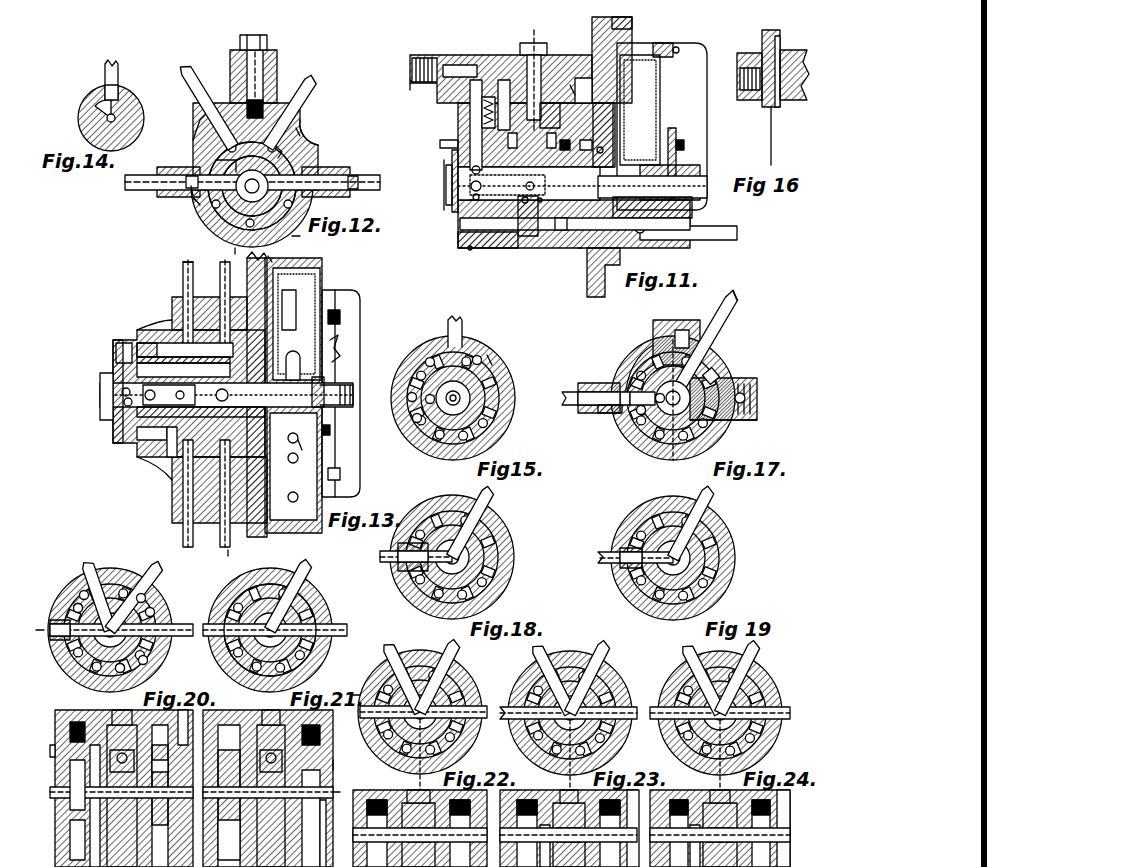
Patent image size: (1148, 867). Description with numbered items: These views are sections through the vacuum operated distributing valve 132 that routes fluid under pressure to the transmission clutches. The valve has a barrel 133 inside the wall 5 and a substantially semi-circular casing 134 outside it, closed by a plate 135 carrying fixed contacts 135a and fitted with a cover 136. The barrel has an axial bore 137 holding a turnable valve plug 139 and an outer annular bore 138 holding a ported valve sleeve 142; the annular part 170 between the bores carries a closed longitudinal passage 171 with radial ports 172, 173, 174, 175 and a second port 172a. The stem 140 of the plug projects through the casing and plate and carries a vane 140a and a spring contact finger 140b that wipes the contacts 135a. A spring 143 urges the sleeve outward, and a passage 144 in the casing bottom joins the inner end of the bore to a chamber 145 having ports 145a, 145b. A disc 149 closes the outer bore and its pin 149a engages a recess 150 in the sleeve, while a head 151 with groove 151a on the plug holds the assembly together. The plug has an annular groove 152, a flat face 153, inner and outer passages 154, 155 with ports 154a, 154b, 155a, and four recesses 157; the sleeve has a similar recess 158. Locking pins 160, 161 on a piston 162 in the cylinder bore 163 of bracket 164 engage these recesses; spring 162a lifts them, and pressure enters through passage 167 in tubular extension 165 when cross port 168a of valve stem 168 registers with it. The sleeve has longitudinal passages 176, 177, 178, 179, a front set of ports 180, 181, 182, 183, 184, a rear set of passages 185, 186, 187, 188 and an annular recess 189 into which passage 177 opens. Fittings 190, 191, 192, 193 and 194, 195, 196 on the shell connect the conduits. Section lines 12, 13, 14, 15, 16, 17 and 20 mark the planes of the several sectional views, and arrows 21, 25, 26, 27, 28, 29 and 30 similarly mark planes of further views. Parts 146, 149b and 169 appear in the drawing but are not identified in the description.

In FIG. 11, the wall 5 is at (592, 22).
In FIG. 11, the section line 12 is at (541, 31).
In FIG. 13, the section line 12 is at (196, 275).
In FIG. 12, the section line 13 is at (125, 172).
In FIG. 11, the section line 13 is at (396, 180).
In FIG. 11, the section line 14 is at (458, 144).
In FIG. 11, the section line 15 is at (470, 114).
In FIG. 11, the section line 16 is at (401, 76).
In FIG. 12, the section line 17 is at (230, 254).
In FIG. 13, the section line 17 is at (226, 556).
In FIG. 20, the section line 20 is at (45, 779).
In FIG. 21, the section line 21 is at (343, 794).
In FIG. 22, the section line 21 is at (350, 690).
In FIG. 20, the section line 25 is at (43, 628).
In FIG. 21, the lever / section line 26 is at (322, 652).
In FIG. 22, the lever / section line 26 is at (383, 678).
In FIG. 18, the lever / section line 27 is at (461, 636).
In FIG. 21, the lever / section line 27 is at (384, 761).
In FIG. 22, the lever / section line 27 is at (438, 676).
In FIG. 23, the section line 28 is at (500, 721).
In FIG. 24, the section line 29 is at (659, 721).
In FIG. 11, the direction arrow 30 is at (644, 27).
In FIG. 12, the distributing valve 132 is at (308, 242).
In FIG. 11, the distributing valve 132 is at (447, 258).
In FIG. 13, the distributing valve 132 is at (109, 459).
In FIG. 17, the distributing valve 132 is at (638, 463).
In FIG. 12, the barrel 133 is at (196, 212).
In FIG. 11, the barrel 133 is at (580, 250).
In FIG. 13, the barrel 133 is at (160, 320).
In FIG. 17, the barrel 133 is at (630, 348).
In FIG. 11, the casing 134 is at (592, 50).
In FIG. 13, the casing 134 is at (322, 262).
In FIG. 11, the plate 135 is at (668, 100).
In FIG. 13, the plate 135 is at (340, 486).
In FIG. 11, the fixed contacts 135a is at (676, 160).
In FIG. 13, the fixed contacts 135a is at (328, 432).
In FIG. 11, the cover 136 is at (676, 140).
In FIG. 13, the cover 136 is at (355, 300).
In FIG. 11, the axial bore 137 is at (600, 180).
In FIG. 13, the axial bore 137 is at (293, 433).
In FIG. 11, the annular bore 138 is at (600, 150).
In FIG. 13, the annular bore 138 is at (293, 463).
In FIG. 14, the valve plug 139 is at (104, 108).
In FIG. 11, the valve plug 139 is at (470, 196).
In FIG. 13, the valve plug 139 is at (125, 405).
In FIG. 15, the valve plug 139 is at (478, 418).
In FIG. 17, the valve plug 139 is at (630, 420).
In FIG. 18, the valve plug 139 is at (485, 566).
In FIG. 19, the valve plug 139 is at (640, 580).
In FIG. 20, the valve plug 139 is at (112, 676).
In FIG. 21, the valve plug 139 is at (265, 680).
In FIG. 22, the valve plug 139 is at (420, 770).
In FIG. 23, the valve plug 139 is at (570, 770).
In FIG. 24, the valve plug 139 is at (720, 770).
In FIG. 11, the stem 140 is at (660, 185).
In FIG. 13, the stem 140 is at (322, 425).
In FIG. 13, the vane 140a is at (335, 300).
In FIG. 13, the spring contact finger 140b is at (340, 352).
In FIG. 12, the valve sleeve 142 is at (216, 148).
In FIG. 11, the valve sleeve 142 is at (530, 232).
In FIG. 13, the valve sleeve 142 is at (137, 437).
In FIG. 17, the valve sleeve 142 is at (650, 445).
In FIG. 18, the valve sleeve 142 is at (495, 562).
In FIG. 19, the valve sleeve 142 is at (612, 572).
In FIG. 20, the valve sleeve 142 is at (95, 676).
In FIG. 21, the valve sleeve 142 is at (330, 640).
In FIG. 22, the valve sleeve 142 is at (380, 670).
In FIG. 23, the valve sleeve 142 is at (540, 800).
In FIG. 24, the valve sleeve 142 is at (690, 768).
In FIG. 11, the spring 143 is at (560, 235).
In FIG. 13, the spring 143 is at (262, 340).
In FIG. 20, the spring 143 is at (182, 728).
In FIG. 11, the passage 144 is at (600, 285).
In FIG. 11, the chamber 145 is at (692, 206).
In FIG. 13, the port 145a is at (293, 503).
In FIG. 13, the port 145b is at (300, 445).
In FIG. 11, the rod 146 is at (737, 236).
In FIG. 11, the disc 149 is at (458, 127).
In FIG. 13, the disc 149 is at (140, 356).
In FIG. 11, the pin 149a is at (451, 239).
In FIG. 13, the sleeve collar 149b is at (120, 352).
In FIG. 12, the recess 150 is at (294, 243).
In FIG. 13, the recess 150 is at (298, 254).
In FIG. 15, the recess 150 is at (453, 404).
In FIG. 21, the recess 150 is at (322, 782).
In FIG. 14, the head 151 is at (100, 118).
In FIG. 11, the head 151 is at (455, 160).
In FIG. 13, the head 151 is at (115, 369).
In FIG. 11, the annular groove 151a is at (450, 172).
In FIG. 13, the annular groove 151a is at (112, 383).
In FIG. 11, the annular groove 152 is at (624, 130).
In FIG. 13, the annular groove 152 is at (285, 318).
In FIG. 12, the flat face 153 is at (279, 104).
In FIG. 11, the flat face 153 is at (575, 85).
In FIG. 13, the flat face 153 is at (118, 400).
In FIG. 15, the flat face 153 is at (462, 345).
In FIG. 12, the inner passage 154 is at (230, 222).
In FIG. 11, the inner passage 154 is at (582, 186).
In FIG. 13, the inner passage 154 is at (258, 394).
In FIG. 17, the inner passage 154 is at (673, 460).
In FIG. 11, the port 154a is at (525, 200).
In FIG. 13, the port 154a is at (262, 370).
In FIG. 17, the port 154a is at (735, 420).
In FIG. 12, the port 154b is at (216, 204).
In FIG. 11, the port 154b is at (540, 200).
In FIG. 13, the port 154b is at (160, 452).
In FIG. 11, the outer passage 155 is at (470, 186).
In FIG. 13, the outer passage 155 is at (118, 390).
In FIG. 15, the outer passage 155 is at (470, 404).
In FIG. 11, the port 155a is at (480, 256).
In FIG. 13, the port 155a is at (145, 420).
In FIG. 11, the recesses 157 is at (470, 203).
In FIG. 15, the recess 158 is at (480, 355).
In FIG. 11, the locking pin 160 is at (470, 124).
In FIG. 11, the locking pin 161 is at (503, 80).
In FIG. 11, the piston 162 is at (527, 70).
In FIG. 11, the spring 162a is at (478, 102).
In FIG. 11, the cylinder bore 163 is at (460, 66).
In FIG. 12, the bracket 164 is at (232, 60).
In FIG. 11, the bracket 164 is at (560, 120).
In FIG. 11, the tubular extension 165 is at (410, 90).
In FIG. 11, the passage 167 is at (470, 68).
In FIG. 16, the passage 167 is at (795, 98).
In FIG. 11, the valve stem 168 is at (440, 62).
In FIG. 16, the valve stem 168 is at (768, 40).
In FIG. 16, the cross port 168a is at (770, 55).
In FIG. 11, the pin 169 is at (775, 144).
In FIG. 12, the annular part 170 is at (318, 145).
In FIG. 11, the annular part 170 is at (590, 165).
In FIG. 13, the annular part 170 is at (172, 460).
In FIG. 15, the annular part 170 is at (463, 382).
In FIG. 17, the annular part 170 is at (735, 385).
In FIG. 21, the annular part 170 is at (325, 618).
In FIG. 12, the longitudinal passage 171 is at (196, 200).
In FIG. 13, the longitudinal passage 171 is at (150, 350).
In FIG. 15, the longitudinal passage 171 is at (416, 394).
In FIG. 20, the longitudinal passage 171 is at (85, 650).
In FIG. 21, the longitudinal passage 171 is at (268, 788).
In FIG. 22, the longitudinal passage 171 is at (420, 828).
In FIG. 23, the longitudinal passage 171 is at (569, 828).
In FIG. 24, the longitudinal passage 171 is at (720, 828).
In FIG. 12, the radial port 172 is at (216, 166).
In FIG. 13, the radial port 172 is at (137, 338).
In FIG. 20, the radial port 172 is at (82, 640).
In FIG. 13, the port 172a is at (170, 340).
In FIG. 17, the port 172a is at (600, 412).
In FIG. 18, the port 172a is at (405, 552).
In FIG. 20, the port 172a is at (72, 730).
In FIG. 12, the radial port 173 is at (212, 156).
In FIG. 20, the radial port 173 is at (92, 594).
In FIG. 12, the radial port 174 is at (280, 150).
In FIG. 20, the radial port 174 is at (150, 600).
In FIG. 12, the radial port 175 is at (330, 193).
In FIG. 20, the radial port 175 is at (150, 664).
In FIG. 12, the longitudinal passage 176 is at (205, 210).
In FIG. 15, the longitudinal passage 176 is at (420, 425).
In FIG. 15, the longitudinal passage 177 is at (420, 399).
In FIG. 12, the longitudinal passage 178 is at (206, 135).
In FIG. 15, the longitudinal passage 178 is at (425, 355).
In FIG. 12, the longitudinal passage 179 is at (296, 130).
In FIG. 15, the longitudinal passage 179 is at (490, 362).
In FIG. 20, the radial port 180 is at (90, 618).
In FIG. 20, the radial port 181 is at (88, 578).
In FIG. 20, the radial port 182 is at (165, 582).
In FIG. 20, the radial port 183 is at (160, 608).
In FIG. 20, the radial port 184 is at (160, 650).
In FIG. 17, the radial passage 185 is at (640, 425).
In FIG. 17, the radial passage 186 is at (660, 345).
In FIG. 17, the radial passage 187 is at (690, 325).
In FIG. 17, the radial passage 188 is at (715, 375).
In FIG. 17, the annular recess 189 is at (640, 378).
In FIG. 12, the fitting 190 is at (192, 178).
In FIG. 13, the fitting 190 is at (183, 282).
In FIG. 12, the fitting 191 is at (198, 88).
In FIG. 12, the fitting 192 is at (306, 98).
In FIG. 12, the fitting 193 is at (352, 176).
In FIG. 13, the fitting 193 is at (183, 506).
In FIG. 13, the fitting 194 is at (226, 282).
In FIG. 17, the fitting 194 is at (562, 398).
In FIG. 17, the fitting 195 is at (742, 303).
In FIG. 19, the fitting 195 is at (692, 523).
In FIG. 13, the fitting 196 is at (220, 541).
In FIG. 17, the fitting 196 is at (758, 398).